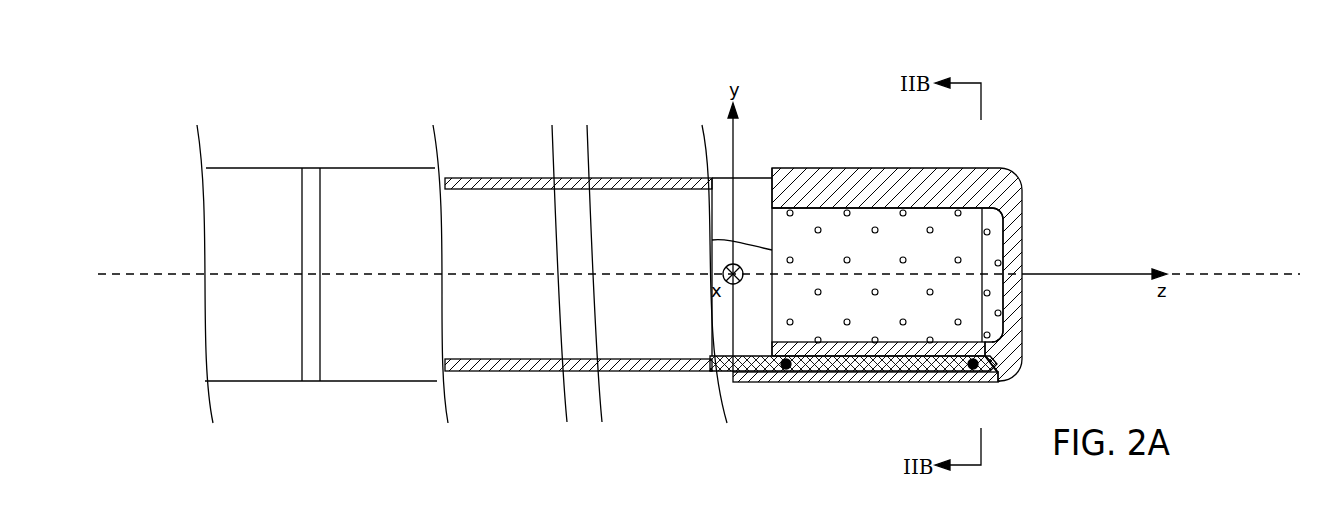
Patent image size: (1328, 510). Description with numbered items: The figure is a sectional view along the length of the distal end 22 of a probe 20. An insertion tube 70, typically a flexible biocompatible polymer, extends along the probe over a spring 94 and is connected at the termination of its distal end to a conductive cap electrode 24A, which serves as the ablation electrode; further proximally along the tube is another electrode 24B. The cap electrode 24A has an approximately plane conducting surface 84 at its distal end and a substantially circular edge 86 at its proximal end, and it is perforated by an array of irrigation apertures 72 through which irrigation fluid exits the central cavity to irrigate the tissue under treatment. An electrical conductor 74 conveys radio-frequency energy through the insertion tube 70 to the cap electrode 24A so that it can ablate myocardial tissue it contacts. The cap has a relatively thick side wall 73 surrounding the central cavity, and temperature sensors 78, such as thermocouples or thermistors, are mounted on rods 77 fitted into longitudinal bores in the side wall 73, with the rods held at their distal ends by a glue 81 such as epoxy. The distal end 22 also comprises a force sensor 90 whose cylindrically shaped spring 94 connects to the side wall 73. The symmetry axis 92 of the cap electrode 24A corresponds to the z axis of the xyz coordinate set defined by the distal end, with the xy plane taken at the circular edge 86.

The distal end 22 is at (505, 73).
The probe 20 is at (254, 168).
The electrode 24B is at (311, 168).
The insertion tube 70 is at (255, 381).
The force sensor 90 is at (586, 296).
The spring 94 is at (669, 178).
The electrical conductor 74 is at (762, 262).
The conductive cap electrode 24A is at (815, 168).
The side wall 73 is at (872, 187).
The plane conducting surface 84 is at (1022, 222).
The irrigation apertures 72 is at (847, 320).
The circular edge 86 is at (712, 371).
The temperature sensors 78 is at (787, 373).
The rods 77 is at (880, 373).
The glue 81 is at (1000, 382).
The symmetry axis 92 is at (127, 278).